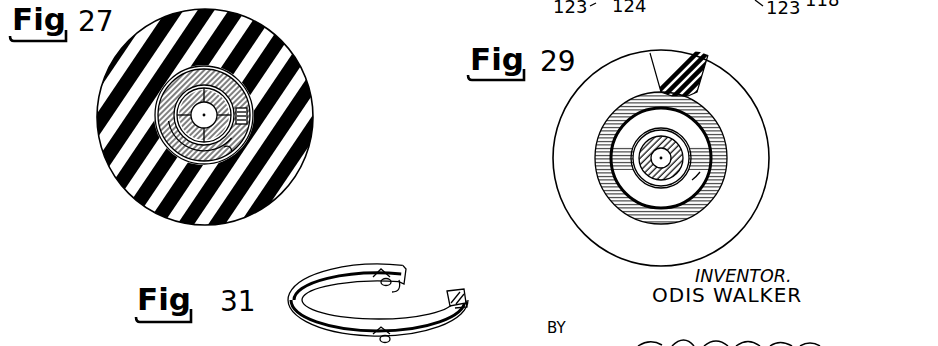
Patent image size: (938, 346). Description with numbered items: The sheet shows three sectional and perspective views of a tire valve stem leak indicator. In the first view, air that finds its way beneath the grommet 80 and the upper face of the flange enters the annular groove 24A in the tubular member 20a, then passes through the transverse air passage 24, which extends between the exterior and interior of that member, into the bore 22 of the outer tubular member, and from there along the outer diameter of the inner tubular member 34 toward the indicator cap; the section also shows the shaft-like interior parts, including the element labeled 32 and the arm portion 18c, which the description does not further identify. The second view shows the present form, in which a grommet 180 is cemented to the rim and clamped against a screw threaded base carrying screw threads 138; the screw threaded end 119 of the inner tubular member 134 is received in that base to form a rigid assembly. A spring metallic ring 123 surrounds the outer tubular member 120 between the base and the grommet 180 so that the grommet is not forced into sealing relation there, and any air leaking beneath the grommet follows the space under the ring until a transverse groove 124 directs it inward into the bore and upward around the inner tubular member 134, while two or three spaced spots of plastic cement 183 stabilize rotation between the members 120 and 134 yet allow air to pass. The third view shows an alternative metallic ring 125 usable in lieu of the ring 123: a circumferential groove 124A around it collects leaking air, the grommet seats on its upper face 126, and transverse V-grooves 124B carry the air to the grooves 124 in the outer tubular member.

In FIG. 27, the grommet 80 is at (290, 62).
In FIG. 27, the tubular member 20a is at (257, 80).
In FIG. 27, the shaft 32 is at (185, 127).
In FIG. 27, the air passage 24 is at (247, 117).
In FIG. 27, the annular groove 24A is at (237, 150).
In FIG. 27, the bore 22 is at (243, 172).
In FIG. 27, the inner tubular member 34 is at (187, 160).
In FIG. 27, the arm 18c is at (284, 0).
In FIG. 29, the grommet 180 is at (722, 80).
In FIG. 29, the outer tubular member 120 is at (705, 115).
In FIG. 29, the spring metallic ring 123 is at (678, 137).
In FIG. 29, the inner tubular member 134 is at (703, 178).
In FIG. 29, the plastic cement spots 183 is at (633, 113).
In FIG. 29, the transverse groove 124 is at (615, 163).
In FIG. 29, the screw threaded end 119 is at (656, 0).
In FIG. 29, the screw threads 138 is at (718, 0).
In FIG. 31, the metallic ring 125 is at (360, 263).
In FIG. 31, the transverse V-grooves 124B is at (386, 340).
In FIG. 31, the upper face 126 is at (450, 292).
In FIG. 31, the circumferential groove 124A is at (466, 305).